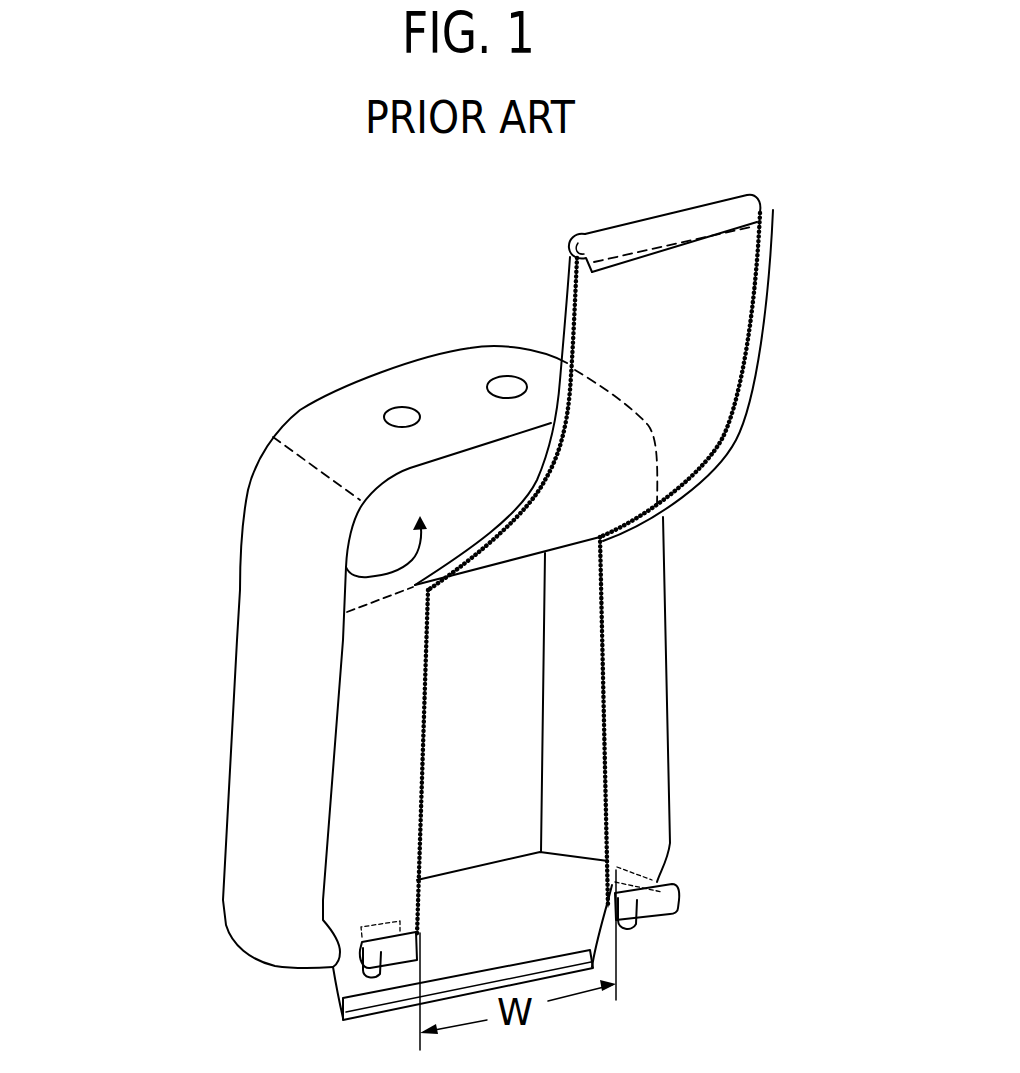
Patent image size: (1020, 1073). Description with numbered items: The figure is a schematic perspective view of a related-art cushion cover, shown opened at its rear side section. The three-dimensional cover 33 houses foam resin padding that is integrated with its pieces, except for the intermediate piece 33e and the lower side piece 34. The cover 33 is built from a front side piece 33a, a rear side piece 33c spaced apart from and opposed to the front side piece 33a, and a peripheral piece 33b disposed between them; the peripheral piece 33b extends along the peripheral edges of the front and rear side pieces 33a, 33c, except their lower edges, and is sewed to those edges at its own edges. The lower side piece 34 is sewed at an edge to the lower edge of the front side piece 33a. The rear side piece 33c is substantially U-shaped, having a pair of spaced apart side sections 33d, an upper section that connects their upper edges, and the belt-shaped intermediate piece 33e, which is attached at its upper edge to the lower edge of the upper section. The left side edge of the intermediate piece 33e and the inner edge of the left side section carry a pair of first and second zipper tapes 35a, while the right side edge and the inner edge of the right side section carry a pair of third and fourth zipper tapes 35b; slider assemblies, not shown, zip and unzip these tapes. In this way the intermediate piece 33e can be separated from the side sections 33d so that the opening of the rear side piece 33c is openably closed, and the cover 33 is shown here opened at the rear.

The three-dimensional cover 33 is at (337, 372).
The front side piece 33a is at (515, 692).
The peripheral piece 33b is at (416, 385).
The rear side piece 33c is at (346, 567).
The side sections 33d is at (362, 818).
The intermediate piece 33e is at (667, 373).
The lower side piece 34 is at (328, 977).
The first and second zipper tapes 35a is at (570, 318).
The third and fourth zipper tapes 35b is at (750, 332).